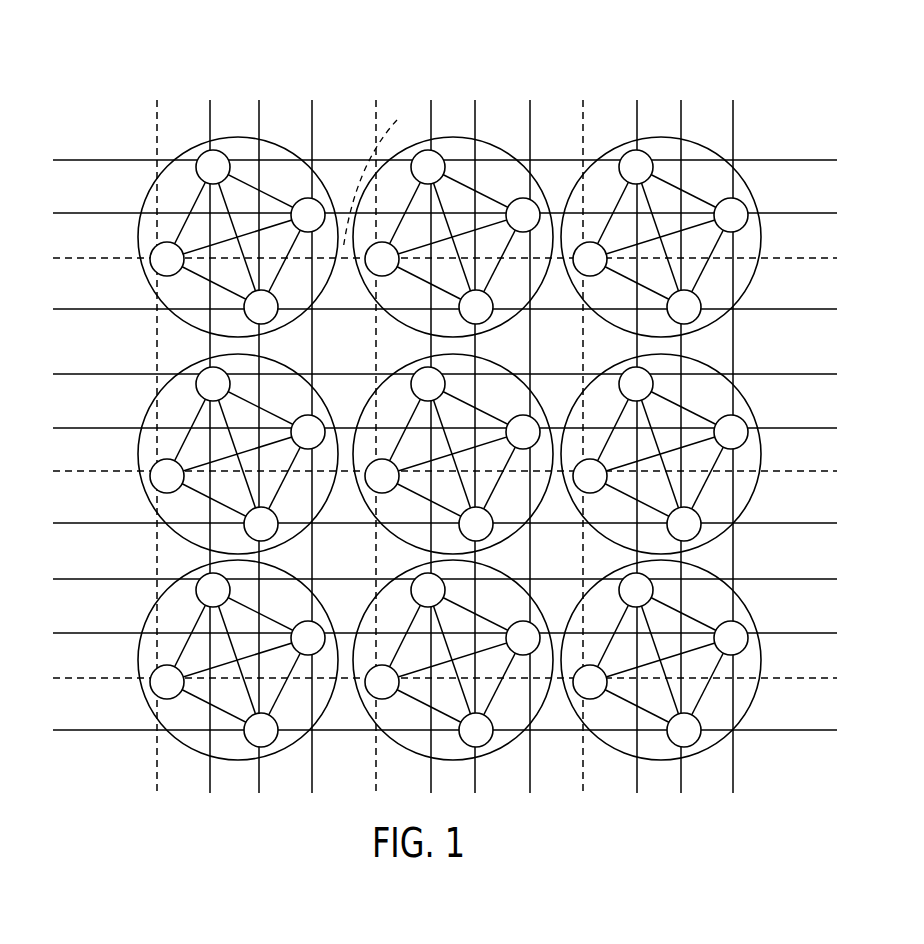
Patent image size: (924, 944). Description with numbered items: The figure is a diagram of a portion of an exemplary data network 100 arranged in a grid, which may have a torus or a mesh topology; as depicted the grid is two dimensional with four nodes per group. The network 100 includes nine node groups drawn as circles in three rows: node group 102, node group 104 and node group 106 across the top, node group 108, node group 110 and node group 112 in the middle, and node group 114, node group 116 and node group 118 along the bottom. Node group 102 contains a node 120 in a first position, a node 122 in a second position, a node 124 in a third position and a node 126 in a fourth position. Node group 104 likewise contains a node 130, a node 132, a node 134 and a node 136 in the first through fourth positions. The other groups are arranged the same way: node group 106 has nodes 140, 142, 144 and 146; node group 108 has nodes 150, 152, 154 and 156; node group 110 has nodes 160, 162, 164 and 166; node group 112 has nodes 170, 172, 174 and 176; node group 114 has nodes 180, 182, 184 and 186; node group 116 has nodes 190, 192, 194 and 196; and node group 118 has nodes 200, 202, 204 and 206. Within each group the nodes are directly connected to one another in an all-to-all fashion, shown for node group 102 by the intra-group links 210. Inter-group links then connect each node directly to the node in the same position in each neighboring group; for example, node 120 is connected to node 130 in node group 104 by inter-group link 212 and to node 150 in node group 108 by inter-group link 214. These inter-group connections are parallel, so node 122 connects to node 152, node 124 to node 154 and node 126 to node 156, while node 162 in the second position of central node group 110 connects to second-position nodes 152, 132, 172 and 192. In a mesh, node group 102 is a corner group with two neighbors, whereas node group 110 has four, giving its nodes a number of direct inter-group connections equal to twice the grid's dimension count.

The data network 100 is at (774, 94).
The node group 102 is at (139, 225).
The node group 104 is at (490, 142).
The node group 106 is at (747, 190).
The node group 108 is at (140, 440).
The node group 110 is at (373, 393).
The node group 112 is at (757, 420).
The node group 114 is at (139, 646).
The node group 116 is at (530, 598).
The node group 118 is at (748, 633).
The node 120 is at (153, 268).
The node 122 is at (245, 312).
The node 124 is at (319, 204).
The node 126 is at (207, 152).
The node 130 is at (370, 268).
The node 132 is at (489, 320).
The node 134 is at (533, 201).
The node 136 is at (438, 152).
The node 140 is at (588, 243).
The node 142 is at (698, 316).
The node 144 is at (750, 214).
The node 146 is at (642, 151).
The node 150 is at (154, 484).
The node 152 is at (249, 532).
The node 154 is at (319, 421).
The node 156 is at (197, 384).
The node 160 is at (370, 486).
The node 162 is at (488, 537).
The node 164 is at (535, 421).
The node 166 is at (416, 373).
The node 170 is at (578, 486).
The node 172 is at (699, 528).
The node 174 is at (748, 436).
The node 176 is at (653, 381).
The node 180 is at (153, 689).
The node 182 is at (264, 746).
The node 184 is at (319, 627).
The node 186 is at (197, 590).
The node 190 is at (371, 694).
The node 192 is at (483, 745).
The node 194 is at (535, 650).
The node 196 is at (415, 583).
The node 200 is at (585, 698).
The node 202 is at (691, 746).
The node 204 is at (748, 643).
The node 206 is at (653, 587).
The intra-group links 210 is at (203, 276).
The inter-group link 212 is at (152, 349).
The inter-group link 214 is at (375, 173).